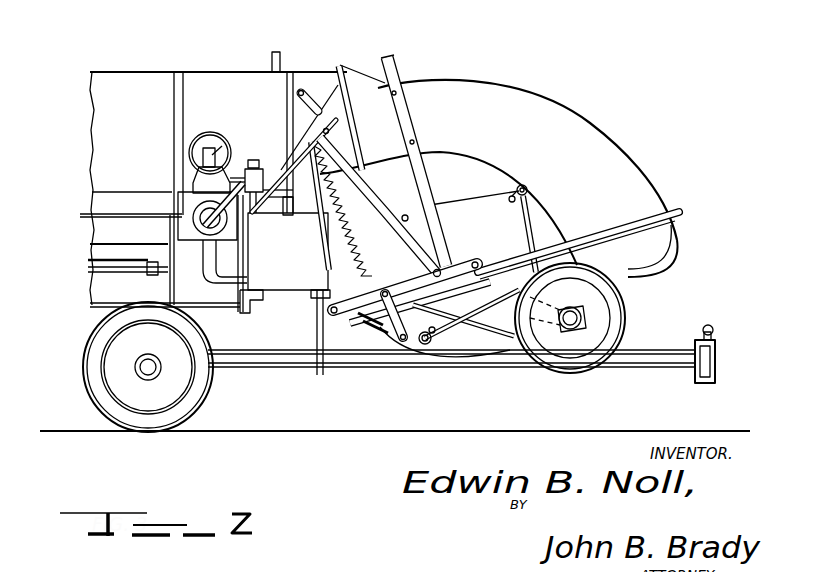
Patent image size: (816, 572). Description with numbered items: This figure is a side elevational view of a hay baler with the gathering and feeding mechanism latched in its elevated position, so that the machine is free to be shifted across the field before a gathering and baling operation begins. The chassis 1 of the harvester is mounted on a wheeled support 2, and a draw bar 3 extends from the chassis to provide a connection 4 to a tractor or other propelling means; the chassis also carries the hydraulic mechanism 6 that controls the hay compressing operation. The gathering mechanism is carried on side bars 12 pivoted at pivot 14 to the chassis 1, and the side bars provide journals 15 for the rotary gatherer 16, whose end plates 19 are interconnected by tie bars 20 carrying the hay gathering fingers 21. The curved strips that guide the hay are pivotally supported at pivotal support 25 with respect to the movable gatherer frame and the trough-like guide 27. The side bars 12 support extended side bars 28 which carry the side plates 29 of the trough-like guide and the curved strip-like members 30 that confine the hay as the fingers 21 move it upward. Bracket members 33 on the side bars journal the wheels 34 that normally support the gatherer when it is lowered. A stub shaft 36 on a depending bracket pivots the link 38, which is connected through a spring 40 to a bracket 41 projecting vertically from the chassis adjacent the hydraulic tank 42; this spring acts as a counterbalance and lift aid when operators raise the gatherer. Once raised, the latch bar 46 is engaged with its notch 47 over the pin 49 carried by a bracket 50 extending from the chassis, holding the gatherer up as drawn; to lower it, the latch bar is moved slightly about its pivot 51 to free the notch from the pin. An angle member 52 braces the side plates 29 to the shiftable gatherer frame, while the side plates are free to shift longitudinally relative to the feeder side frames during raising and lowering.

The chassis 1 is at (317, 286).
The wheeled support 2 is at (152, 400).
The draw bar 3 is at (648, 372).
The connection 4 is at (718, 357).
The hydraulic mechanism 6 is at (164, 174).
The side bars 12 is at (362, 294).
The pivot 14 is at (321, 348).
The journals 15 is at (477, 263).
The rotary gatherer 16 is at (482, 197).
The end plates 19 is at (518, 248).
The tie bars 20 is at (521, 203).
The hay gathering fingers 21 is at (520, 185).
The pivotal support 25 is at (374, 333).
The trough-like guide 27 is at (213, 87).
The extended side bars 28 is at (601, 236).
The side plates 29 is at (580, 128).
The curved strip-like members 30 is at (684, 273).
The bracket members 33 is at (500, 360).
The wheels 34 is at (585, 357).
The stub shaft 36 is at (434, 323).
The link 38 is at (386, 290).
The spring 40 is at (375, 258).
The bracket 41 is at (288, 112).
The hydraulic tank 42 is at (289, 282).
The latch bar 46 is at (310, 93).
The notch 47 is at (382, 82).
The pin 49 is at (282, 78).
The bracket 50 is at (283, 168).
The pivot 51 is at (441, 265).
The angle member 52 is at (404, 115).